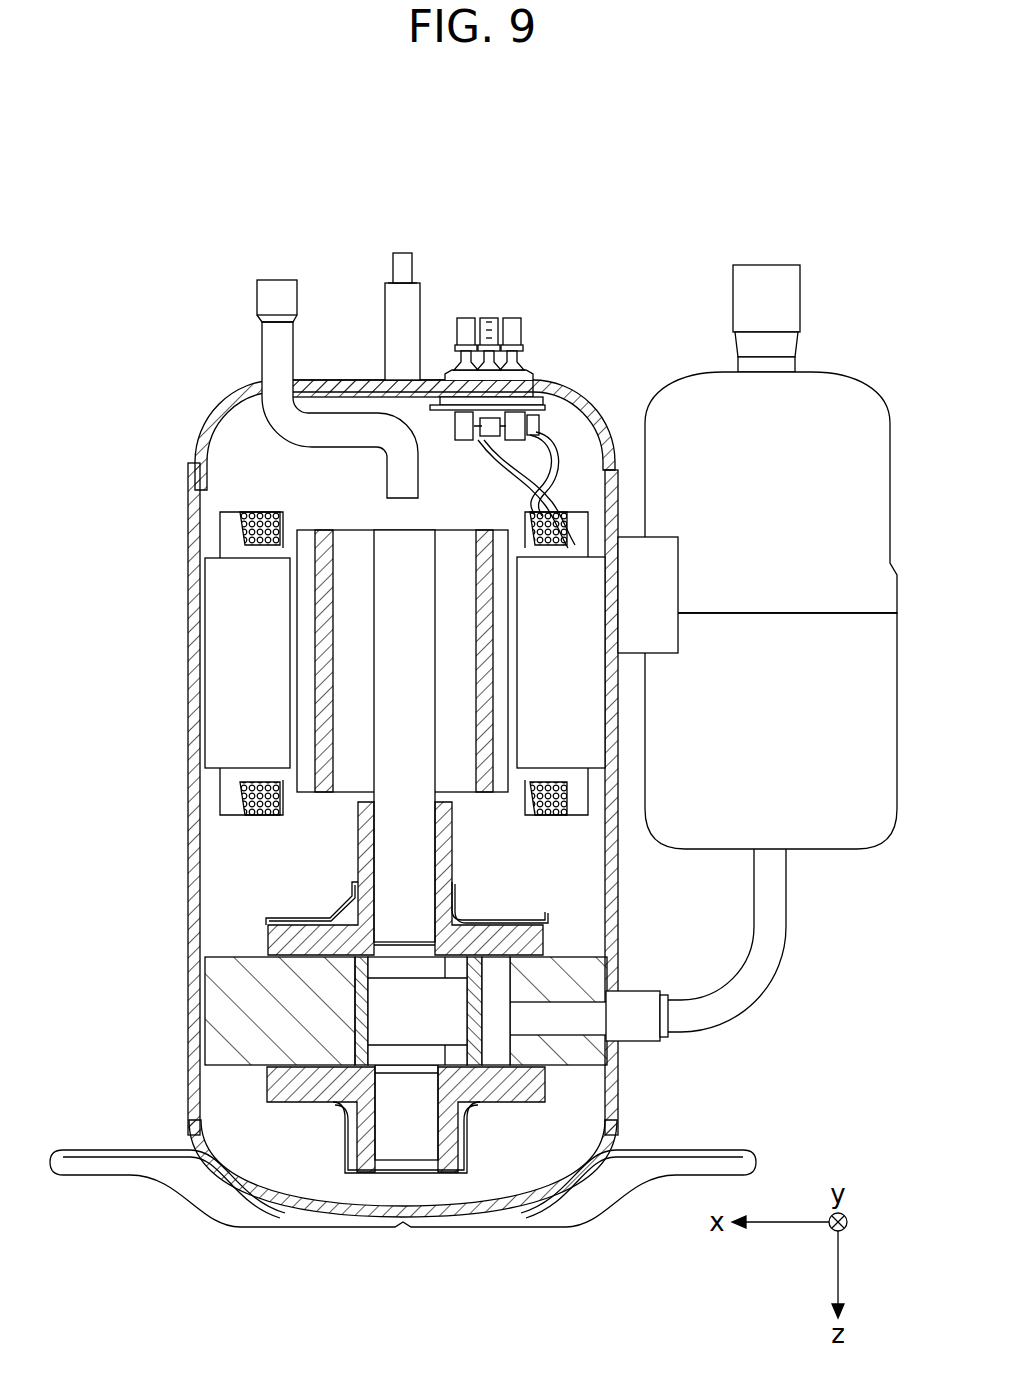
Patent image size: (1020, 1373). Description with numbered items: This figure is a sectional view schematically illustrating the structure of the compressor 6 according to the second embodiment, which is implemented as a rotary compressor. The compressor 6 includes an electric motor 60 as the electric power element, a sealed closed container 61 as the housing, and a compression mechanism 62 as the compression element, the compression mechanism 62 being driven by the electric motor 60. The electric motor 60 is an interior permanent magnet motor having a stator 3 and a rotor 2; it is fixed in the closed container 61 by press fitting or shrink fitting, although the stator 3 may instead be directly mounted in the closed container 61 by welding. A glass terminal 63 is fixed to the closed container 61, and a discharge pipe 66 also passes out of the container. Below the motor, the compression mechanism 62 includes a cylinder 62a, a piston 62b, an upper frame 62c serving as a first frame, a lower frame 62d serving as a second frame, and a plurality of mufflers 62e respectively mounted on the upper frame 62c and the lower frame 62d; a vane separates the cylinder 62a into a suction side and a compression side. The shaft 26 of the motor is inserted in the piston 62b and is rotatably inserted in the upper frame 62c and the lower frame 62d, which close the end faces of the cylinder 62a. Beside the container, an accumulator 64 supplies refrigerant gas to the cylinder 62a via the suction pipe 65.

The compressor 6 is at (191, 187).
The electric motor 60 is at (290, 490).
The closed container 61 is at (189, 496).
The discharge pipe 66 is at (288, 348).
The glass terminal 63 is at (521, 326).
The stator 3 is at (238, 826).
The rotor 2 is at (320, 797).
The shaft 26 is at (403, 547).
The compression mechanism 62 is at (318, 1122).
The cylinder 62a is at (237, 955).
The piston 62b is at (353, 1005).
The upper frame 62c is at (525, 935).
The lower frame 62d is at (503, 1085).
The mufflers 62e is at (337, 905).
The accumulator 64 is at (866, 388).
The suction pipe 65 is at (771, 1012).